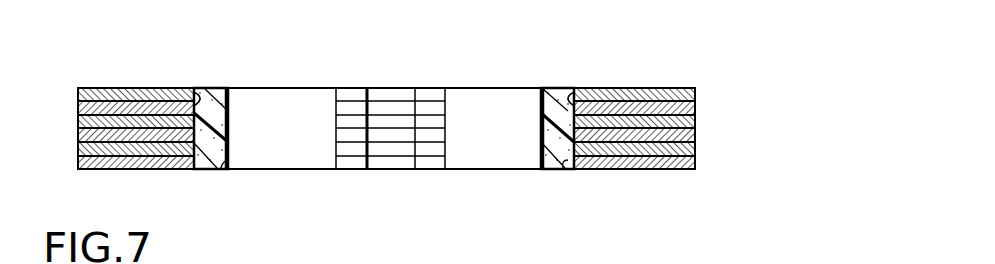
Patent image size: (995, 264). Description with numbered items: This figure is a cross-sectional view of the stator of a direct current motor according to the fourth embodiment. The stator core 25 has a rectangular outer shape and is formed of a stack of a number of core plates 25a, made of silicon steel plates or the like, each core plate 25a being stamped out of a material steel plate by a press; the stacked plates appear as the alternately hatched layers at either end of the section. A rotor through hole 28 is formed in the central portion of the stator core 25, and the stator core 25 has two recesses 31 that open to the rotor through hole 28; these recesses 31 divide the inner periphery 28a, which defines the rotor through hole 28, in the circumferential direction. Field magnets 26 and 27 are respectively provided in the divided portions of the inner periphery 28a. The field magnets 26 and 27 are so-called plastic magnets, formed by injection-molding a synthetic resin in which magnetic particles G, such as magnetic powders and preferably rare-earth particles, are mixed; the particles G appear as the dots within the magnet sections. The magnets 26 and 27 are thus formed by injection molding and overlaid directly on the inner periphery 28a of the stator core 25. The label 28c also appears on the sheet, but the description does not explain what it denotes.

The stator core 25 is at (441, 110).
The core plate 25a is at (763, 153).
The field magnet 26 is at (224, 169).
The field magnet 27 is at (551, 170).
The rotor through hole 28 is at (357, 143).
The inner periphery 28a is at (201, 89).
The electrode portion 28c is at (445, 255).
The recess 31 is at (392, 110).
The magnetic particles G is at (219, 91).